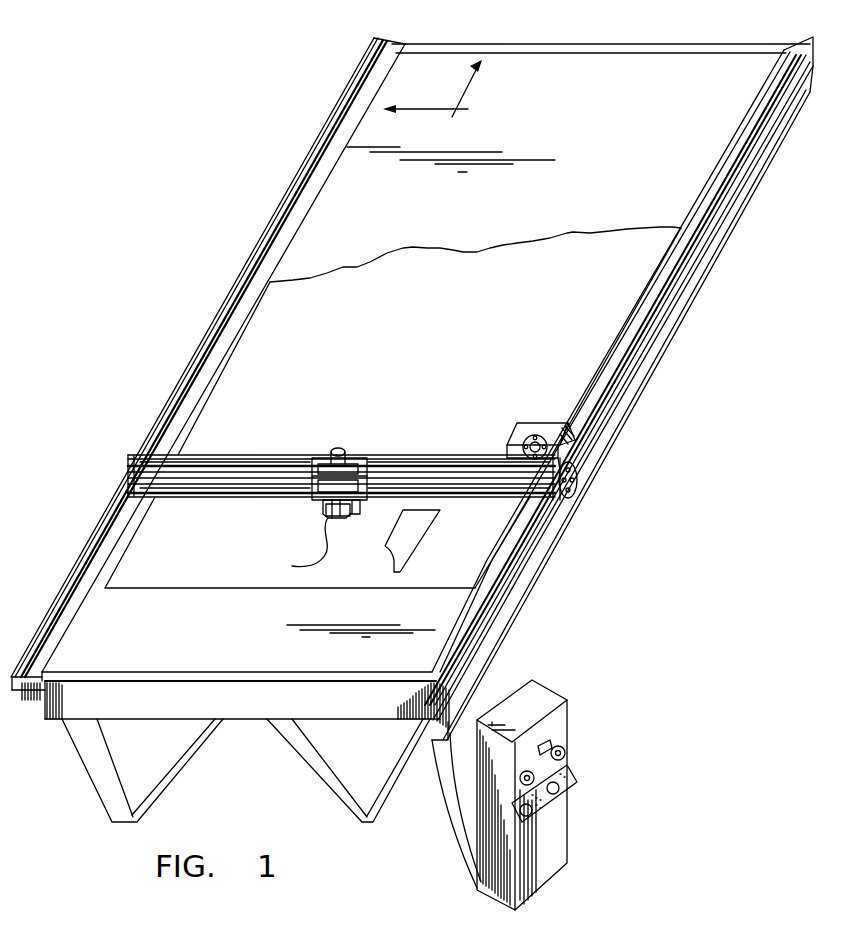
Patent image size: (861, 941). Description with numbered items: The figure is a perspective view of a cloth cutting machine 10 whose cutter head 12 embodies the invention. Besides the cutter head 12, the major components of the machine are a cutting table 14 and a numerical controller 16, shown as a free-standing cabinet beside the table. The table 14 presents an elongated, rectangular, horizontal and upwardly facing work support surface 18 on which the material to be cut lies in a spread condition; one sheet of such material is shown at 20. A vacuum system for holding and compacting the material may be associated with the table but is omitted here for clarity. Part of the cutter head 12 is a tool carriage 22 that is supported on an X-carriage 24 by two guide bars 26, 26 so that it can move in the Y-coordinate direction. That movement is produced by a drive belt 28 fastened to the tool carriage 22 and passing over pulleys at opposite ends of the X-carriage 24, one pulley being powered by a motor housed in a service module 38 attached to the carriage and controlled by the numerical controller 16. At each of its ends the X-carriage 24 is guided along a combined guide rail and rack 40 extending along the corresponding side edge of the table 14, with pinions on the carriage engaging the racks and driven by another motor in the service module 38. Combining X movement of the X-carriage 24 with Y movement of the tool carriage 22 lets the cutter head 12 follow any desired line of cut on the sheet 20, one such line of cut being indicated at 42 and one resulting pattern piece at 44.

The cloth cutting machine 10 is at (303, 97).
The cutter head 12 is at (313, 509).
The cutting table 14 is at (777, 142).
The numerical controller 16 is at (530, 702).
The work support surface 18 is at (555, 68).
The sheet of material 20 is at (500, 258).
The tool carriage 22 is at (367, 457).
The X-carriage 24 is at (393, 463).
The guide bars 26 is at (442, 475).
The drive belt 28 is at (222, 487).
The service module 38 is at (520, 438).
The combined guide rail and rack 40 is at (213, 328).
The line of cut 42 is at (328, 557).
The pattern piece 44 is at (413, 537).